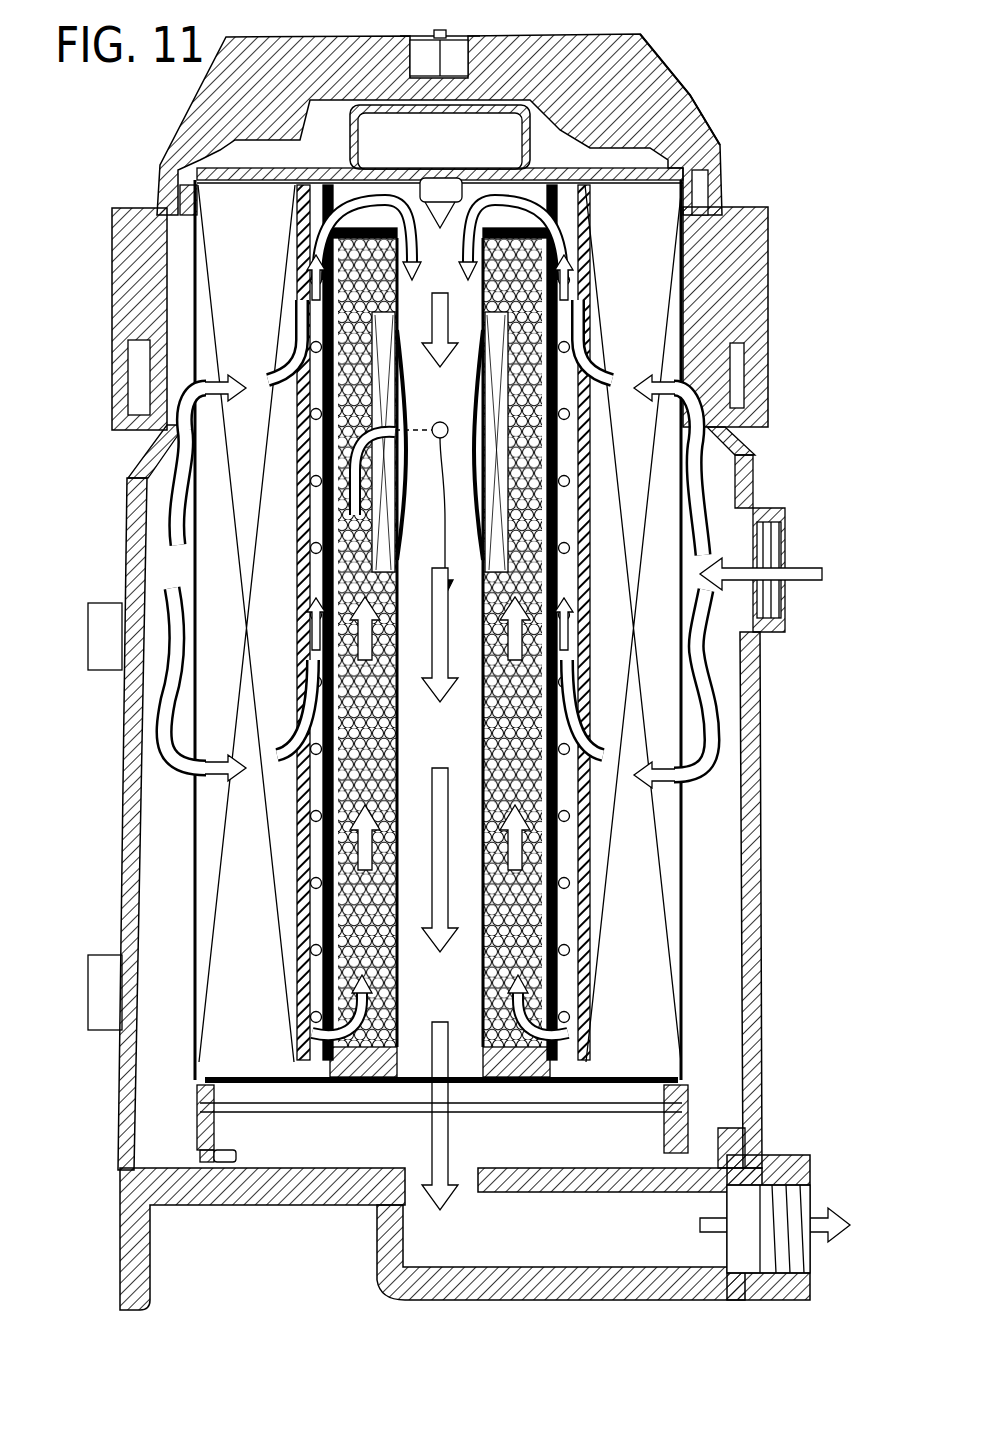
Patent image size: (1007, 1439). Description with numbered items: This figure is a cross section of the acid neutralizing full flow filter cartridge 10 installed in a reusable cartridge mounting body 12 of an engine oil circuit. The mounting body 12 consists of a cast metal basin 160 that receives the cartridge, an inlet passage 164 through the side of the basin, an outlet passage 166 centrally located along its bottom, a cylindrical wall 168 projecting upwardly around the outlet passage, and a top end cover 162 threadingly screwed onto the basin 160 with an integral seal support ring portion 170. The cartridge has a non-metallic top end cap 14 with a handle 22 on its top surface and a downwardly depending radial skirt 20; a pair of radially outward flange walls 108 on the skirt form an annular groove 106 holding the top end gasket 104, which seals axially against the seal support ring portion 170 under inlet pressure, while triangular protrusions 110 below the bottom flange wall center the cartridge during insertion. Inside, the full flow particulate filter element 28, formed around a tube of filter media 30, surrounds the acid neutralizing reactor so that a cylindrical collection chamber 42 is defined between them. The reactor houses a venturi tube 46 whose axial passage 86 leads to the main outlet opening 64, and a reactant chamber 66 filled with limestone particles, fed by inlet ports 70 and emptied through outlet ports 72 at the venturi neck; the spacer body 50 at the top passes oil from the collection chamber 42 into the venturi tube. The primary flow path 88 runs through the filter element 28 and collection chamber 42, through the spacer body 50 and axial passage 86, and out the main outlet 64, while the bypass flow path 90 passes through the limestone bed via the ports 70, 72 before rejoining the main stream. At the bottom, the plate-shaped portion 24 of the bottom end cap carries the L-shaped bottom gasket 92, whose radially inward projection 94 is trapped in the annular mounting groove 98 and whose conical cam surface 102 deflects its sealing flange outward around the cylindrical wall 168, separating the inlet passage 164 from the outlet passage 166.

The filter cartridge 10 is at (705, 340).
The cartridge mounting body 12 is at (98, 574).
The top end cap 14 is at (700, 150).
The radial skirt 20 is at (700, 183).
The handle 22 is at (508, 100).
The plate-shaped portion 24 is at (312, 1085).
The full flow particulate filter element 28 is at (228, 868).
The filter media 30 is at (215, 531).
The cylindrical collection chamber 42 is at (310, 487).
The venturi tube 46 is at (318, 772).
The spacer body 50 is at (392, 225).
The central opening 64 is at (418, 1075).
The reactant chamber 66 is at (545, 762).
The inlet ports 70 is at (330, 1020).
The outlet ports 72 is at (446, 428).
The axial passage 86 is at (320, 680).
The primary flow path 88 is at (115, 340).
The bypass flow path 90 is at (297, 393).
The bottom gasket 92 is at (190, 1112).
The radially inward projection 94 is at (205, 1090).
The annular mounting groove 98 is at (225, 1093).
The conical cam surface 102 is at (212, 1150).
The top end gasket 104 is at (168, 212).
The annular groove 106 is at (198, 205).
The flange walls 108 is at (112, 279).
The triangular protrusions 110 is at (300, 302).
The basin 160 is at (120, 604).
The top end cover 162 is at (662, 70).
The inlet passage 164 is at (772, 592).
The outlet passage 166 is at (790, 1258).
The cylindrical wall 168 is at (222, 1160).
The seal support ring portion 170 is at (160, 222).